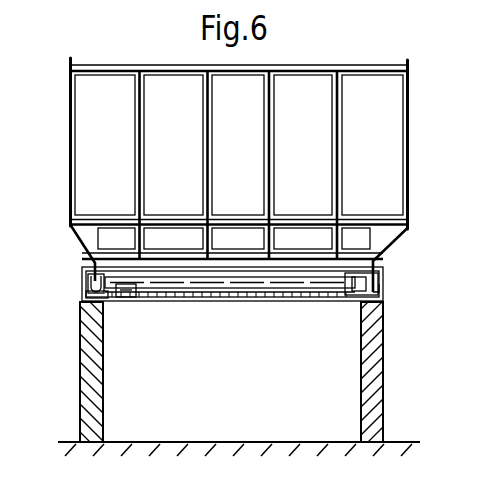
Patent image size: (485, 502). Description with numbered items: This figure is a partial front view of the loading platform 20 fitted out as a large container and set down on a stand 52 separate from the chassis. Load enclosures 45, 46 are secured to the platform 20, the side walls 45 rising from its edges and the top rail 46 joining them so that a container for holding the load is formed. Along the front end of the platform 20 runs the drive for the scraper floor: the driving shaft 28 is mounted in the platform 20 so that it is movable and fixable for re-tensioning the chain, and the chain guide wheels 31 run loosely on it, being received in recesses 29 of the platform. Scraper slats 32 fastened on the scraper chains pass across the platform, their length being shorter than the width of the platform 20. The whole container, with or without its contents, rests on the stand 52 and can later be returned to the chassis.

The loading platform 20 is at (217, 301).
The driving shaft 28 is at (87, 282).
The recess 29 is at (94, 296).
The chain guide wheel 31 is at (130, 297).
The scraper slat 32 is at (92, 258).
The load enclosure 45 is at (69, 100).
The load enclosure 46 is at (339, 66).
The stand 52 is at (386, 283).